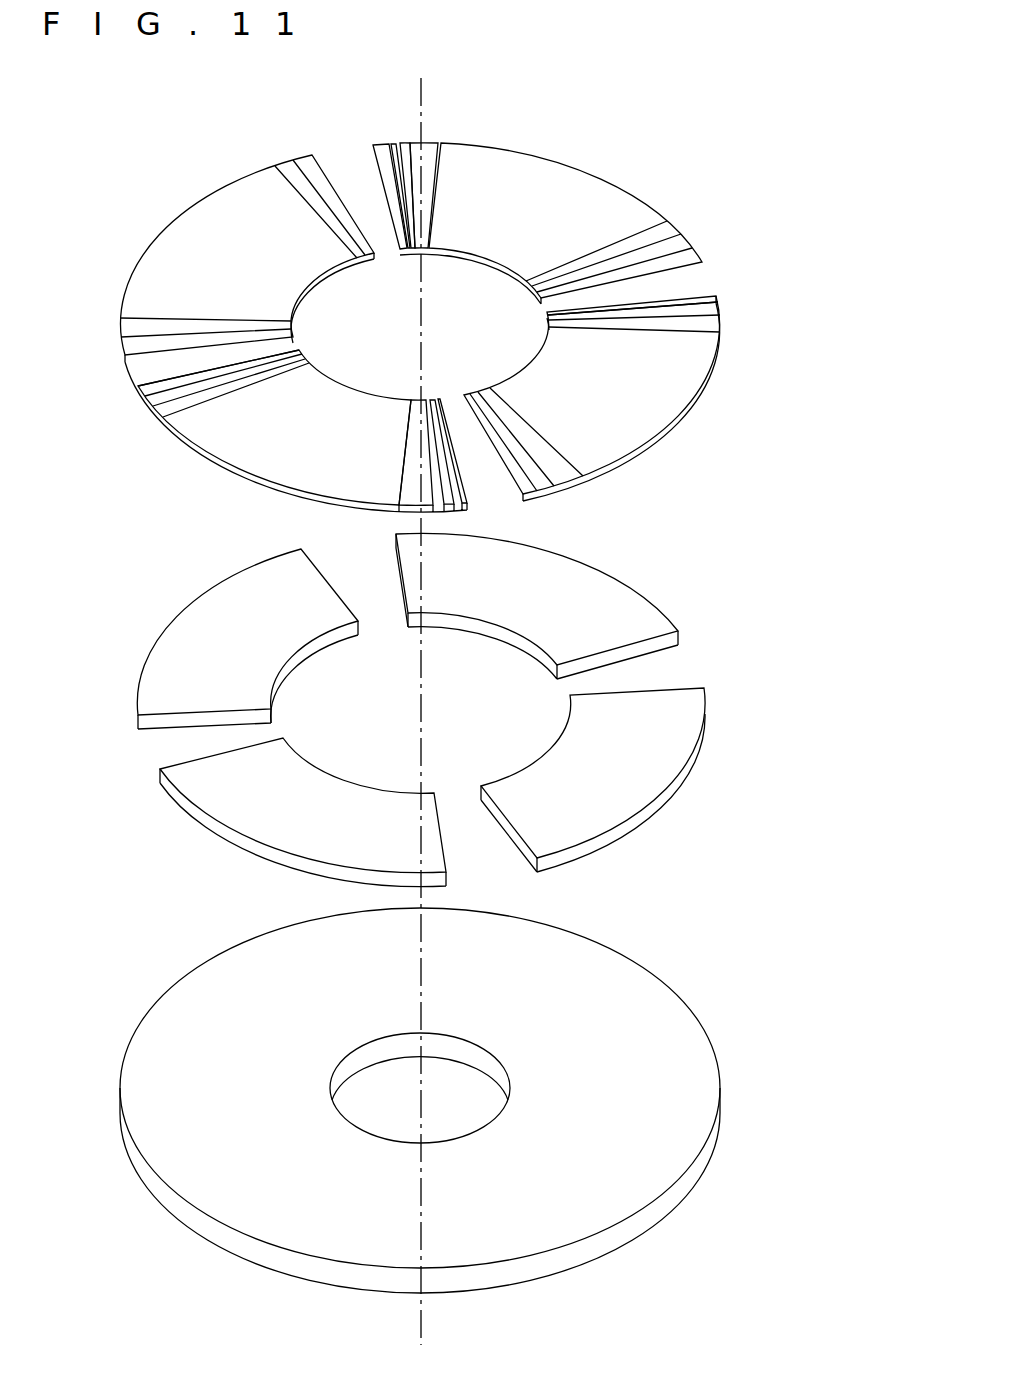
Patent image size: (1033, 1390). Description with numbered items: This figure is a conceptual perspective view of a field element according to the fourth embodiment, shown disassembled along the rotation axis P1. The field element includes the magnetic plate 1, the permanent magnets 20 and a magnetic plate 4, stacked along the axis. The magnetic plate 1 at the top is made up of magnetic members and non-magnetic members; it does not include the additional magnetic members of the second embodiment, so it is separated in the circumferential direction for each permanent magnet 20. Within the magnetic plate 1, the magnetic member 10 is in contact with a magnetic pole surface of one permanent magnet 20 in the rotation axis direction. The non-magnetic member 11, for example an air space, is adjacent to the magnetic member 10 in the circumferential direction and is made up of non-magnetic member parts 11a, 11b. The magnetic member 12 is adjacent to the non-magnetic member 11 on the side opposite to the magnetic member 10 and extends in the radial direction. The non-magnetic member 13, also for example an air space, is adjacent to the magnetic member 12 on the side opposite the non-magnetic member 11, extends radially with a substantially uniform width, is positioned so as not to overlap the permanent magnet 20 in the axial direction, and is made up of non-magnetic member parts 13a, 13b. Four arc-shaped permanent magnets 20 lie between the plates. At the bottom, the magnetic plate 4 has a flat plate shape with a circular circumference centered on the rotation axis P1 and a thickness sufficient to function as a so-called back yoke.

The magnetic plate 1 is at (488, 348).
The magnetic plate 4 is at (607, 1240).
The magnetic member 10 is at (640, 433).
The non-magnetic member 11 is at (488, 325).
The non-magnetic member part 11a is at (720, 318).
The non-magnetic member part 11b is at (720, 330).
The magnetic member 12 is at (720, 304).
The non-magnetic member 13 is at (497, 384).
The non-magnetic member part 13a is at (707, 286).
The non-magnetic member part 13b is at (720, 299).
The permanent magnet 20 is at (628, 605).
The central axis P1 is at (420, 697).